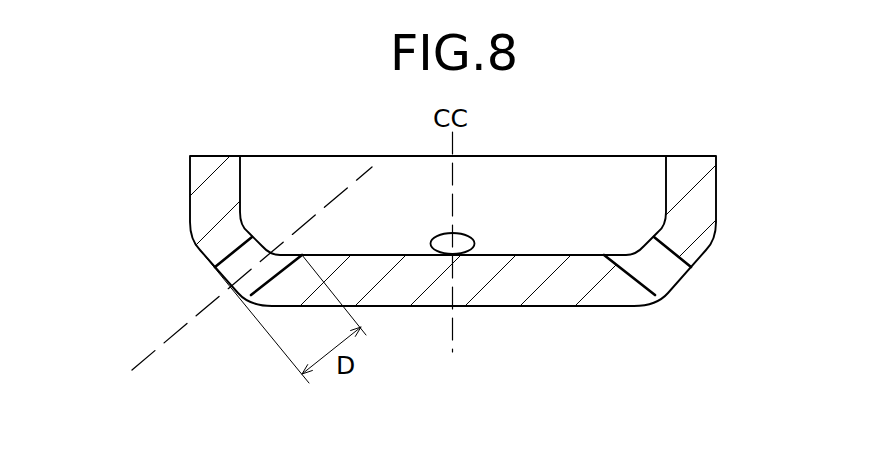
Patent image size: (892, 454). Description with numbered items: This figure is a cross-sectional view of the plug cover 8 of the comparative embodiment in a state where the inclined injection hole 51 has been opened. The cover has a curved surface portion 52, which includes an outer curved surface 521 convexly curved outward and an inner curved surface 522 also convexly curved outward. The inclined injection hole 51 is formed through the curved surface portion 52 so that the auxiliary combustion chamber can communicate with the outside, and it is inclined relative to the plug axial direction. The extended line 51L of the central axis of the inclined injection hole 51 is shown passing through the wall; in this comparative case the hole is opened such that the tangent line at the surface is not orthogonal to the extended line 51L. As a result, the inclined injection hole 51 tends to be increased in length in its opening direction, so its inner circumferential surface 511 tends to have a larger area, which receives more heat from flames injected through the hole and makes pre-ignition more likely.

The plug cover 8 is at (396, 284).
The inclined injection hole 51 is at (450, 313).
The inner circumferential surface 511 is at (670, 256).
The extended line 51L is at (224, 280).
The curved surface portion 52 is at (263, 293).
The outer curved surface 521 is at (216, 266).
The inner curved surface 522 is at (258, 207).